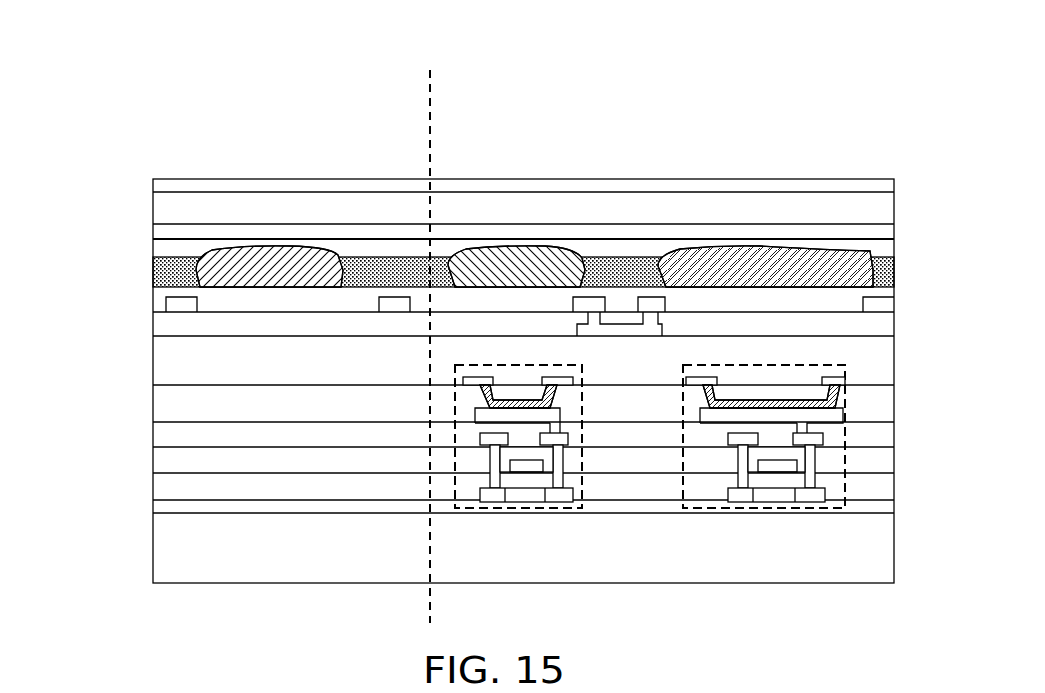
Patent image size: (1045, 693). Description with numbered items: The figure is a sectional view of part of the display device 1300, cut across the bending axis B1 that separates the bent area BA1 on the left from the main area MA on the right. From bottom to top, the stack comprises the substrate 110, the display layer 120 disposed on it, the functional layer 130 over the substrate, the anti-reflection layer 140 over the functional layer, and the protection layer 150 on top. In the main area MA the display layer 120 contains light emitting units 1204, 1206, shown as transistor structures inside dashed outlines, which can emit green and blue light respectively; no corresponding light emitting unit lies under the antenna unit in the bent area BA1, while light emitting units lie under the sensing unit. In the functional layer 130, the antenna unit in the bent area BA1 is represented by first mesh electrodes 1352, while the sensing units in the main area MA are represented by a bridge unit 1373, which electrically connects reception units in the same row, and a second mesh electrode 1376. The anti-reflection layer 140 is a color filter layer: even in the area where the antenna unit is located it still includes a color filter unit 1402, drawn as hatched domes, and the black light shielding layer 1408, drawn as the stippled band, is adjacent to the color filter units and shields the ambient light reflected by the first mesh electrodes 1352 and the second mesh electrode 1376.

The display device 1300 is at (765, 92).
The substrate 110 is at (685, 560).
The display layer 120 is at (148, 513).
The light emitting unit 1204 is at (530, 508).
The light emitting unit 1206 is at (757, 508).
The functional layer 130 is at (148, 336).
The first mesh electrode 1352 is at (182, 302).
The bridge unit 1373 is at (615, 333).
The second mesh electrode 1376 is at (884, 302).
The anti-reflection layer 140 is at (468, 212).
The color filter unit 1402 is at (233, 255).
The light shielding layer 1408 is at (172, 282).
The protection layer 150 is at (148, 239).
The bent area BA1 is at (229, 78).
The main area MA is at (597, 78).
The bending axis B1 is at (427, 331).